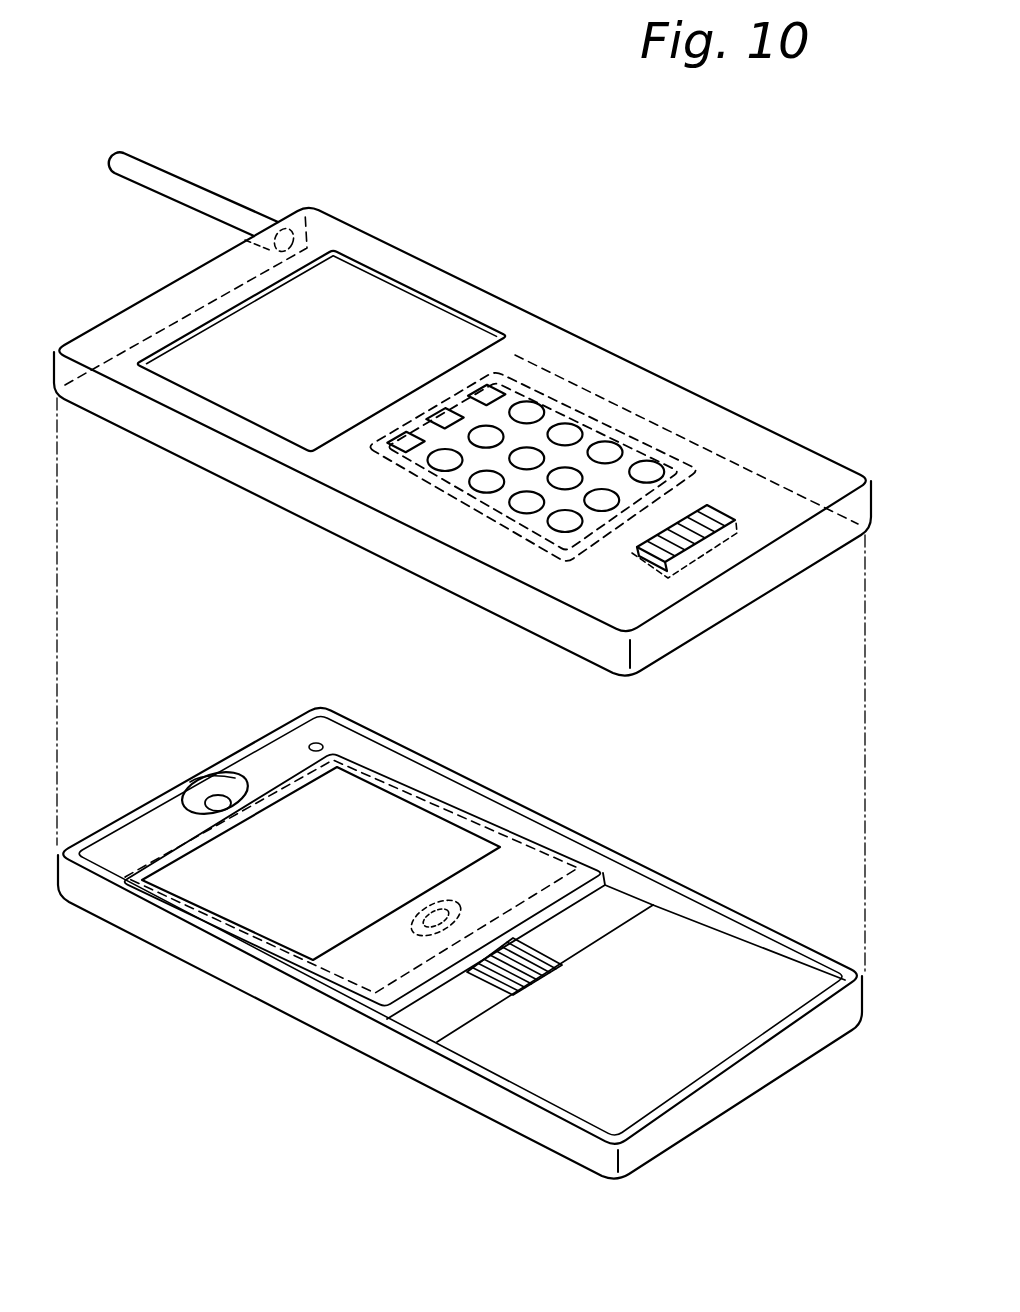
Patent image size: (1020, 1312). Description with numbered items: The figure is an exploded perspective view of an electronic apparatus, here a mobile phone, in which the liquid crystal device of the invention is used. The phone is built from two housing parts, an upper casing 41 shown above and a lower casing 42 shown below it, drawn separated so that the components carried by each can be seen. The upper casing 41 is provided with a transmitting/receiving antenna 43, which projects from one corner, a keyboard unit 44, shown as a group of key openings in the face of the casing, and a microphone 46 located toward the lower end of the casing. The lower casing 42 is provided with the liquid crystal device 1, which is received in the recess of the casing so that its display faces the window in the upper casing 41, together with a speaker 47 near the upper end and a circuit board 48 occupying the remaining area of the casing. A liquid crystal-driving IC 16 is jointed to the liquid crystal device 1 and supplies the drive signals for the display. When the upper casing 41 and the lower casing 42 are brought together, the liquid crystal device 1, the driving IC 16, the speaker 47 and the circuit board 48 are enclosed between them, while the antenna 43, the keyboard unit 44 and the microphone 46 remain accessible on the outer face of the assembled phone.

The liquid crystal device 1 is at (425, 850).
The liquid crystal-driving IC 16 is at (410, 904).
The upper casing 41 is at (637, 380).
The lower casing 42 is at (648, 890).
The transmitting/receiving antenna 43 is at (217, 203).
The keyboard unit 44 is at (440, 497).
The microphone 46 is at (698, 563).
The speaker 47 is at (197, 788).
The circuit board 48 is at (750, 967).